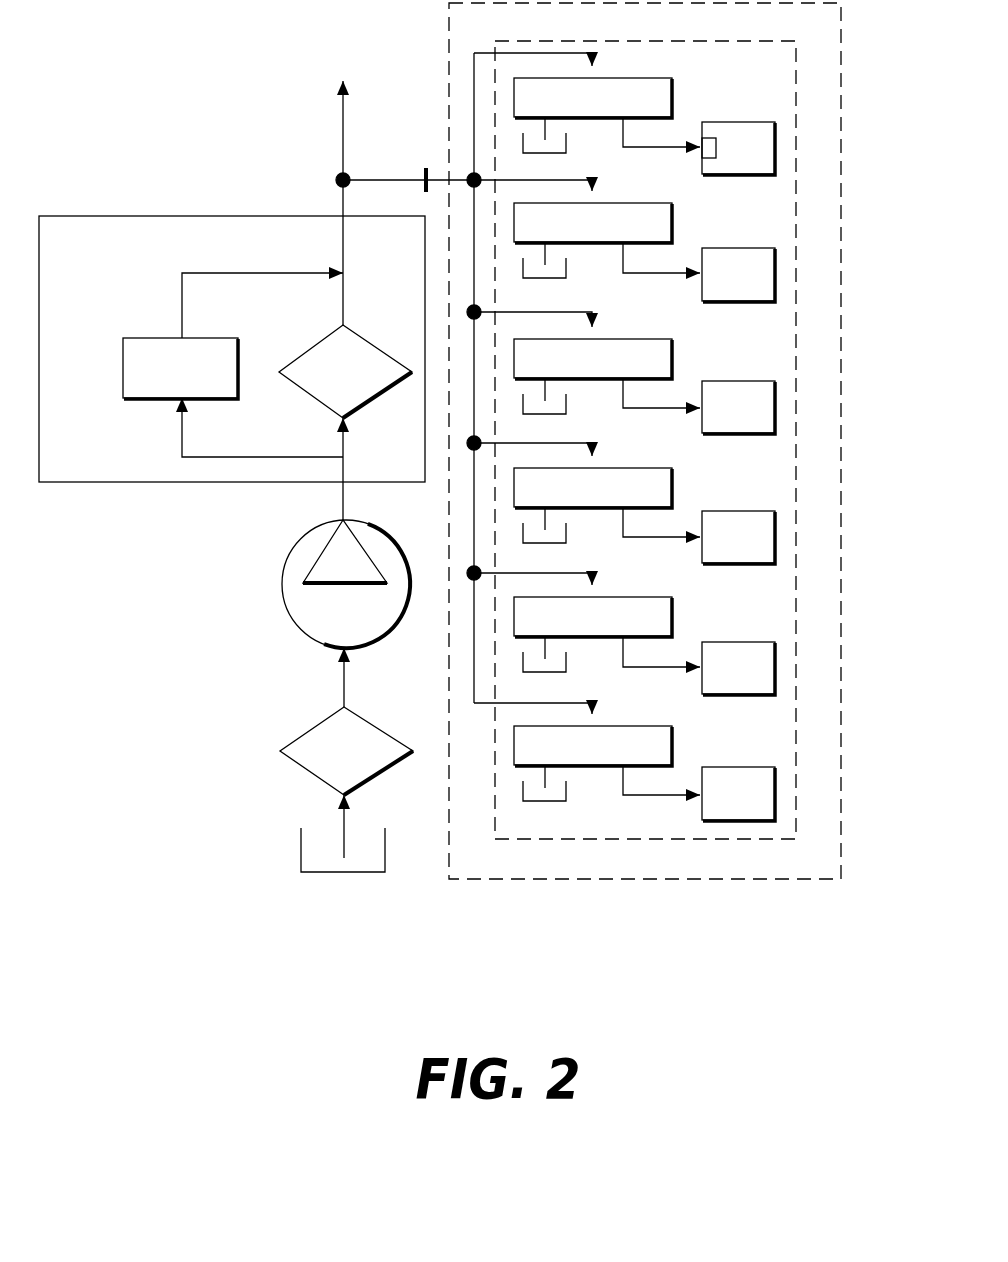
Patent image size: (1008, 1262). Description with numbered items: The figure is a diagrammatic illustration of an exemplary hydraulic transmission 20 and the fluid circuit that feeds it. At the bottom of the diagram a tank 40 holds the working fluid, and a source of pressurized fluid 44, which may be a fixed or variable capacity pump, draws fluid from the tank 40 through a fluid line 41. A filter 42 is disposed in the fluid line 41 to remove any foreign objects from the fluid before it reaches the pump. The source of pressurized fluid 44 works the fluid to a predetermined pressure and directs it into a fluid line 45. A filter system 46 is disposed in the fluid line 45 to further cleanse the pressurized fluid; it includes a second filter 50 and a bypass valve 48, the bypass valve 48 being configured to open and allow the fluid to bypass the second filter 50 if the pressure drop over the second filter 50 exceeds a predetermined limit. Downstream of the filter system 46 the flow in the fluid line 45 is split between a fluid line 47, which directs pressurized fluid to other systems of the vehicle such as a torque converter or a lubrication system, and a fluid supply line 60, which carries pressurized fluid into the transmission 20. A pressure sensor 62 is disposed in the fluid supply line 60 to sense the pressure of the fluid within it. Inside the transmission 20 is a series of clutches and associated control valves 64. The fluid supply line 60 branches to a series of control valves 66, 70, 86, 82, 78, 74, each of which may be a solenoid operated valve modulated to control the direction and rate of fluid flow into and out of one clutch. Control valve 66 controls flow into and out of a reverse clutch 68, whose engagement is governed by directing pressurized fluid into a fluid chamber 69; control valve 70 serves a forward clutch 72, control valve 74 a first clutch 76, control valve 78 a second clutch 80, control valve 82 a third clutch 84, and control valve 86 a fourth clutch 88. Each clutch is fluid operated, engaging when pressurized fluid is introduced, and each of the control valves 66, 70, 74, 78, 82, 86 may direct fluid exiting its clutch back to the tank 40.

The transmission 20 is at (841, 220).
The tank 40 is at (301, 852).
The fluid line 41 is at (344, 683).
The filter 42 is at (300, 736).
The source of pressurized fluid 44 is at (282, 588).
The fluid line 45 is at (343, 205).
The filter system 46 is at (90, 216).
The fluid line 47 is at (343, 130).
The bypass valve 48 is at (140, 338).
The second filter 50 is at (310, 348).
The fluid supply line 60 is at (357, 178).
The pressure sensor 62 is at (426, 168).
The control valves 64 is at (795, 85).
The control valve 66 is at (607, 112).
The reverse clutch 68 is at (738, 148).
The fluid chamber 69 is at (710, 138).
The control valve 70 is at (607, 238).
The forward clutch 72 is at (738, 275).
The control valve 74 is at (607, 760).
The first clutch 76 is at (738, 794).
The control valve 78 is at (607, 632).
The second clutch 80 is at (738, 668).
The control valve 82 is at (607, 502).
The third clutch 84 is at (738, 537).
The control valve 86 is at (607, 373).
The fourth clutch 88 is at (738, 407).